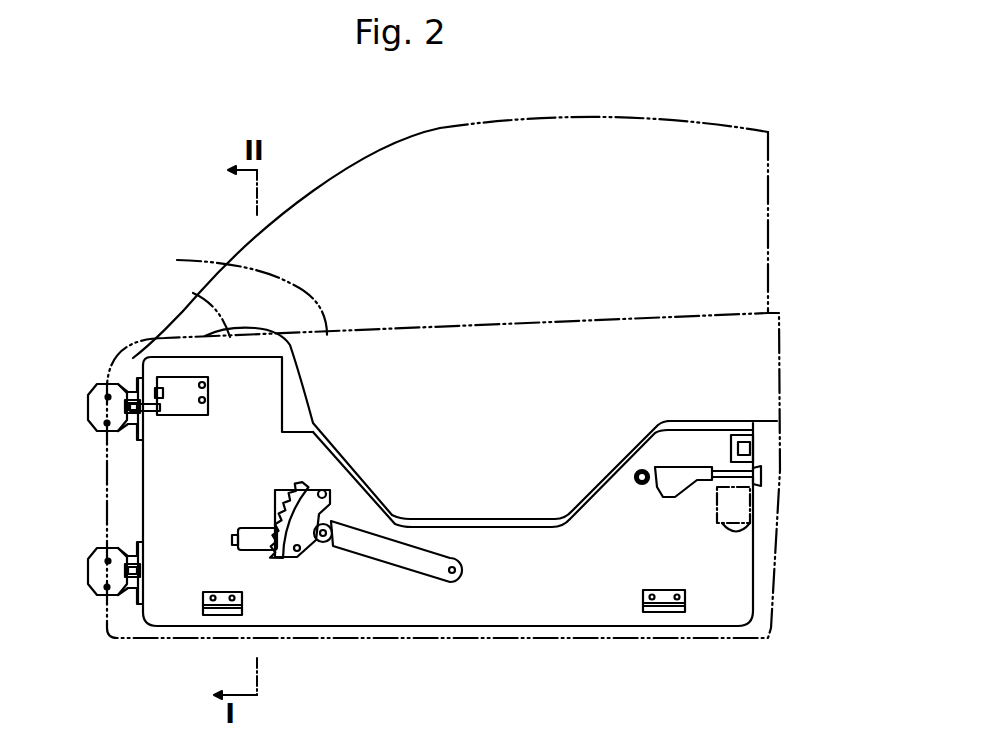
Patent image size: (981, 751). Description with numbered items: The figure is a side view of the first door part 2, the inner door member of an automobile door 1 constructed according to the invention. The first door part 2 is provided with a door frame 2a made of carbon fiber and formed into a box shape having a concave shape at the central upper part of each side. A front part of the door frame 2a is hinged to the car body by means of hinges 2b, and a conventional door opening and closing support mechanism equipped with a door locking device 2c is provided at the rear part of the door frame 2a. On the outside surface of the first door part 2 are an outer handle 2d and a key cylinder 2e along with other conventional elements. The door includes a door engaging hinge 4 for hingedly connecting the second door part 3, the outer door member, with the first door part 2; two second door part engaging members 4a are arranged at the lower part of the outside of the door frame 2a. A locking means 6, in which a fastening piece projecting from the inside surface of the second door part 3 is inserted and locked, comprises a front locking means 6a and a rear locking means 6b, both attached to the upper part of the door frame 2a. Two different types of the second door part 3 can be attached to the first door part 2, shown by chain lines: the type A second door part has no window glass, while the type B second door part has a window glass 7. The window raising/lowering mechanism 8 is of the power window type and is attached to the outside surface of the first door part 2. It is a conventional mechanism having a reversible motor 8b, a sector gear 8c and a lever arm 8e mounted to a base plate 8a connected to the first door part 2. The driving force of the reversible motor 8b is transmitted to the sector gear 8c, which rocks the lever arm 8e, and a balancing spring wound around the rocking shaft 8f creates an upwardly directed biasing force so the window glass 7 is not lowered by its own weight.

The vehicle door 1 is at (154, 204).
The first door part 2 is at (143, 467).
The door frame 2a is at (153, 512).
The hinges 2b is at (110, 383).
The door locking device 2c is at (755, 528).
The outer handle 2d is at (745, 452).
The key cylinder 2e is at (627, 468).
The second door part 3 is at (193, 293).
The door engaging hinge 4 is at (450, 629).
The second door part engaging members 4a is at (200, 597).
The locking means 6 is at (454, 401).
The front locking means 6a is at (190, 377).
The rear locking means 6b is at (700, 463).
The window glass 7 is at (686, 123).
The window raising/lowering mechanism 8 is at (322, 501).
The base plate 8a is at (317, 490).
The reversible motor 8b is at (245, 548).
The sector gear 8c is at (293, 483).
The lever arm 8e is at (410, 557).
The rocking shaft 8f is at (328, 532).
The A type second door part A is at (703, 420).
The B type second door part B is at (723, 313).